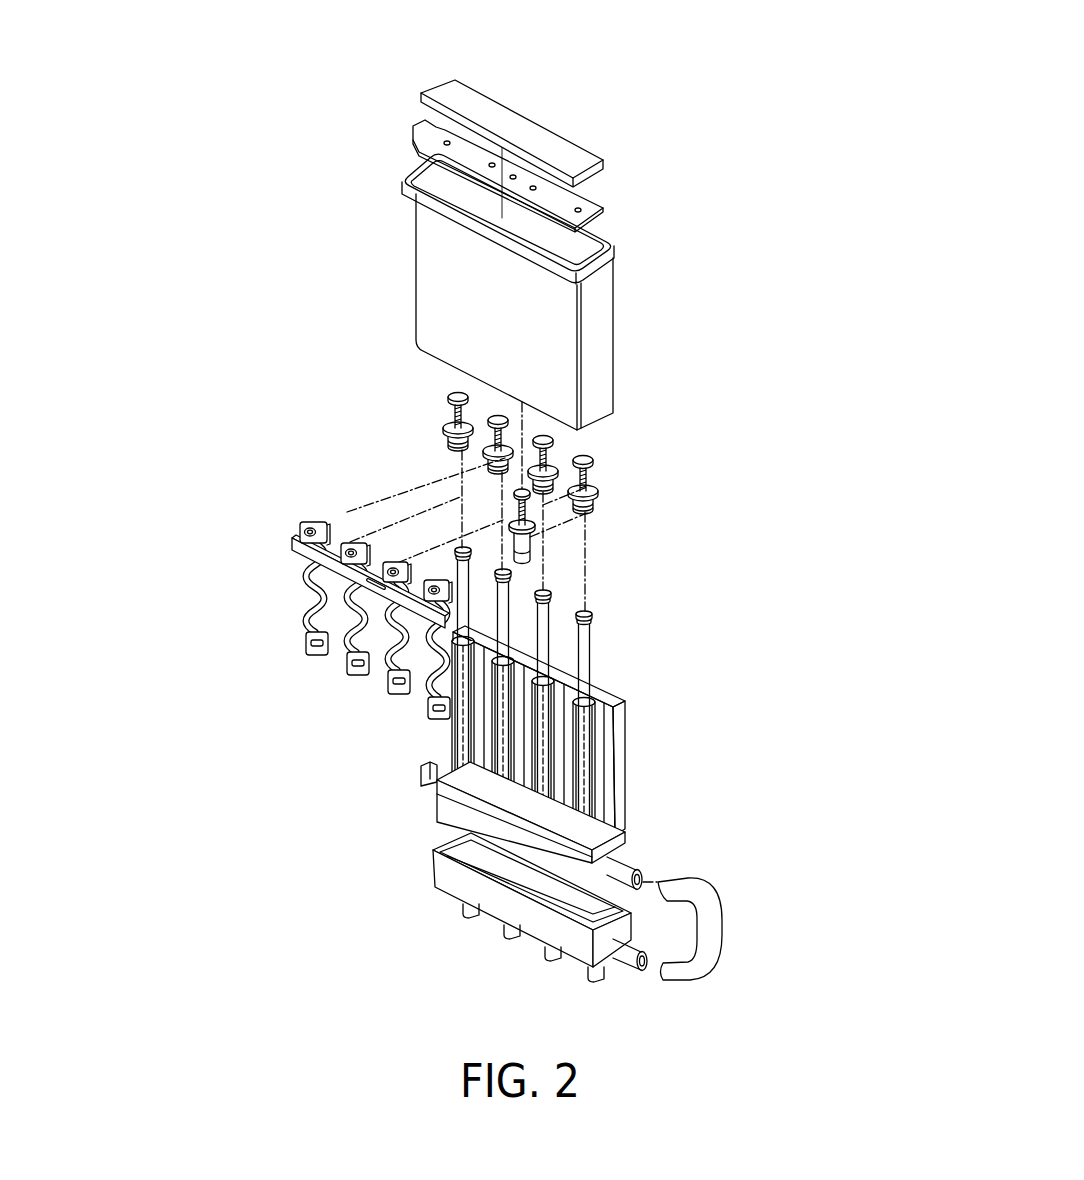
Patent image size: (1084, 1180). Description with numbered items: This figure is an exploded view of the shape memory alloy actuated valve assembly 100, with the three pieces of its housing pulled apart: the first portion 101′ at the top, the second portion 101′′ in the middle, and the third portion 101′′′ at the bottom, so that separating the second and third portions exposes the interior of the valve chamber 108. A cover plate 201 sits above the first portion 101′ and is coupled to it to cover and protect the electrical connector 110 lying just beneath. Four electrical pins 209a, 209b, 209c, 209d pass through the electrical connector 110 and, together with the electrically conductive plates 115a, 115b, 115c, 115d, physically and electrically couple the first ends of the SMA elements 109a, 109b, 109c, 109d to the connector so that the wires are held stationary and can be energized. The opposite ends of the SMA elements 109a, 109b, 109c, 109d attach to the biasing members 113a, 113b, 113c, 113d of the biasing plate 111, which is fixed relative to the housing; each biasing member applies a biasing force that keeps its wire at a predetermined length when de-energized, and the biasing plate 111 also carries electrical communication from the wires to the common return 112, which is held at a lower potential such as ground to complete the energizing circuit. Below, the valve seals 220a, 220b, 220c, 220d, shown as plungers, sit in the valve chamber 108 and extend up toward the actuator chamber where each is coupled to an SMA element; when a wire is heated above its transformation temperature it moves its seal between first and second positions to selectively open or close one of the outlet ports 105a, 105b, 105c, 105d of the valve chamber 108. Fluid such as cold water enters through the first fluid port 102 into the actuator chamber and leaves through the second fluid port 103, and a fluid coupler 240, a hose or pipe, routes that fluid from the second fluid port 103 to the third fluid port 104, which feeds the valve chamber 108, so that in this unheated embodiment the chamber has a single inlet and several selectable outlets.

The SMA actuated valve assembly 100 is at (716, 76).
The cover plate 201 is at (581, 134).
The electrical connector 110 is at (626, 205).
The first portion of the housing 101′ is at (617, 308).
The electrical pin 209a is at (596, 491).
The electrical pin 209b is at (553, 446).
The electrical pin 209c is at (490, 448).
The electrical pin 209d is at (450, 423).
The common return 112 is at (499, 521).
The valve seal 220a is at (612, 648).
The valve seal 220b is at (560, 602).
The valve seal 220c is at (515, 580).
The valve seal 220d is at (456, 549).
The biasing plate 111 is at (320, 540).
The electrically conductive plate 115a is at (431, 580).
The electrically conductive plate 115b is at (395, 562).
The electrically conductive plate 115c is at (353, 543).
The electrically conductive plate 115d is at (306, 521).
The SMA element 109a is at (430, 698).
The SMA element 109b is at (392, 678).
The SMA element 109c is at (345, 652).
The SMA element 109d is at (302, 566).
The biasing member 113a is at (440, 720).
The biasing member 113b is at (387, 672).
The biasing member 113c is at (350, 668).
The biasing member 113d is at (306, 620).
The first fluid port 102 is at (420, 773).
The second portion of the housing 101′′ is at (437, 800).
The valve chamber 108 is at (435, 851).
The third portion of the housing 101′′′ is at (438, 883).
The outlet port 105a is at (594, 982).
The outlet port 105b is at (553, 961).
The outlet port 105c is at (512, 938).
The outlet port 105d is at (470, 917).
The second fluid port 103 is at (647, 880).
The third fluid port 104 is at (642, 962).
The fluid coupler 240 is at (722, 912).